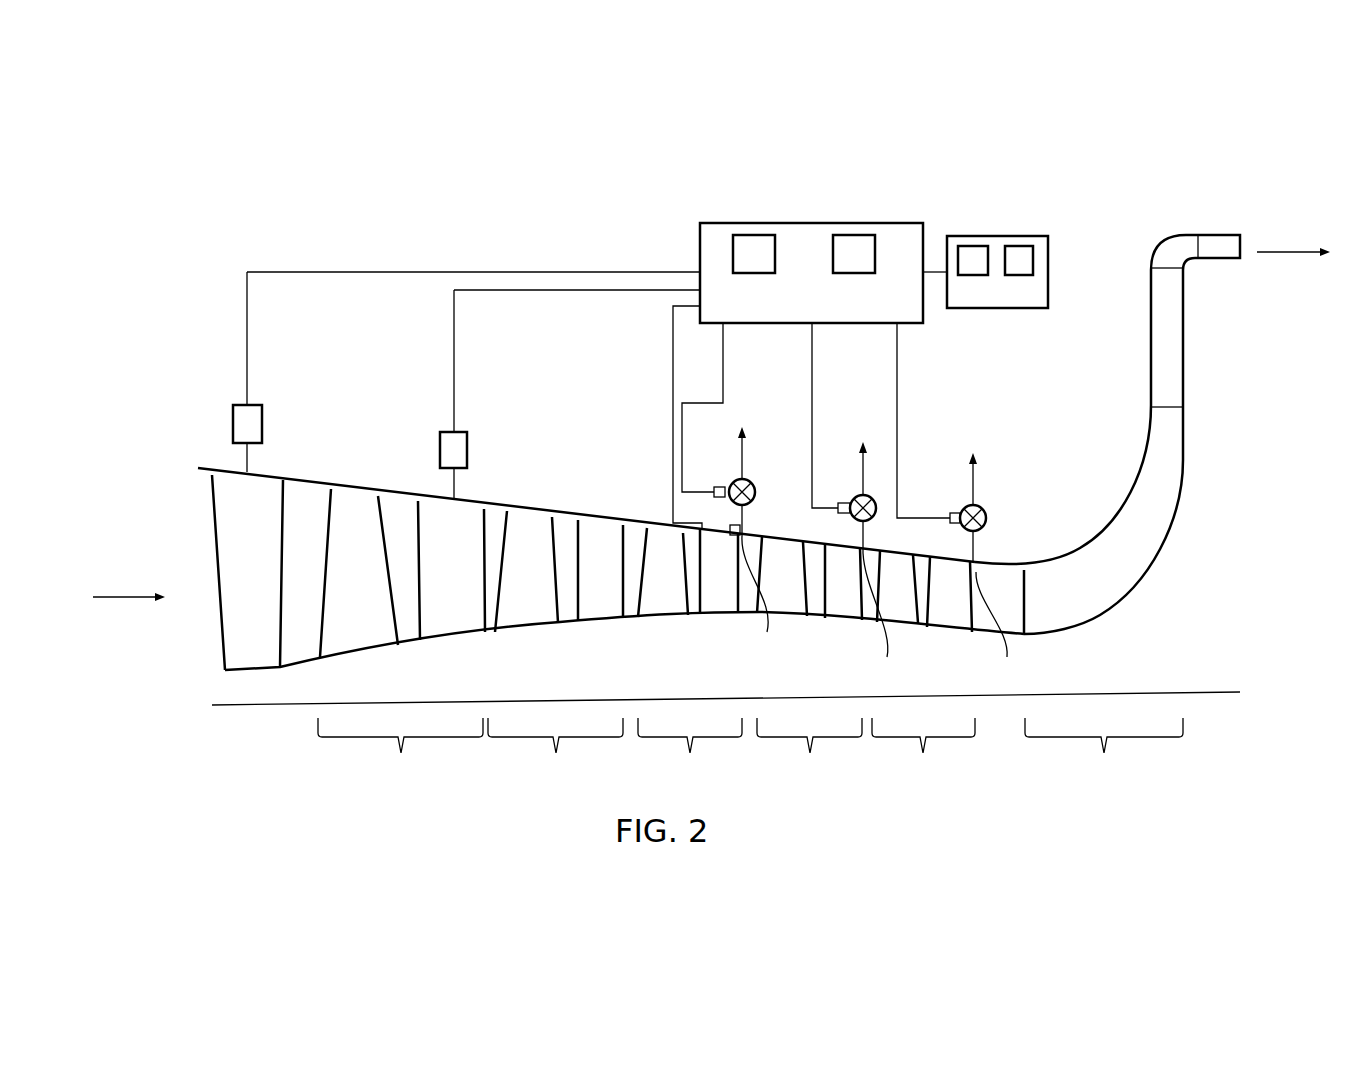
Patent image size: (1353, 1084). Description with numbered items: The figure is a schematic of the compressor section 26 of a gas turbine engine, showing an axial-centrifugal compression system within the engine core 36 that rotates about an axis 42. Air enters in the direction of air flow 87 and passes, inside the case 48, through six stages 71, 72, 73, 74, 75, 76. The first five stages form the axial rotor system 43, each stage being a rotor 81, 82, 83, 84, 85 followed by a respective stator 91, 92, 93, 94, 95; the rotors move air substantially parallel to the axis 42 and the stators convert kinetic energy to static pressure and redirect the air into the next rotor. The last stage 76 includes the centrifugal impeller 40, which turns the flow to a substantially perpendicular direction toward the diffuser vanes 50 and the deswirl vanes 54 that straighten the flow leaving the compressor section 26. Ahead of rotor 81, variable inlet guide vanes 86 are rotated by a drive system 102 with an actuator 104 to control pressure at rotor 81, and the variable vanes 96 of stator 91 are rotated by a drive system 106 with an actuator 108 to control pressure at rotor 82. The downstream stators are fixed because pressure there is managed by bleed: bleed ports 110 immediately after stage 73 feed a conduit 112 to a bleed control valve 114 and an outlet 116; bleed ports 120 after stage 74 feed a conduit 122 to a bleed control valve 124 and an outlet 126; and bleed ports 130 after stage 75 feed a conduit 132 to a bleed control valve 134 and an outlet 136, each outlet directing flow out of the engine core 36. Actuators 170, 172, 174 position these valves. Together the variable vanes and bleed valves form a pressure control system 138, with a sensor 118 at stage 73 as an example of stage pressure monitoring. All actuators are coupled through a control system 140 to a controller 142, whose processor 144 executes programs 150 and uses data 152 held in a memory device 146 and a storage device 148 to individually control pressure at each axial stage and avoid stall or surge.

The compressor section 26 is at (552, 399).
The engine core 36 is at (634, 533).
The centrifugal impeller 40 is at (1074, 614).
The axis 42 is at (1180, 690).
The axial rotor system 43 is at (355, 479).
The case 48 is at (308, 482).
The diffuser vanes 50 is at (1173, 353).
The deswirl vanes 54 is at (1223, 247).
The first stage 71 is at (400, 753).
The second stage 72 is at (555, 753).
The third stage 73 is at (690, 756).
The fourth stage 74 is at (809, 756).
The fifth stage 75 is at (923, 756).
The sixth stage 76 is at (1104, 758).
The first rotor 81 is at (371, 634).
The second rotor 82 is at (543, 617).
The third rotor 83 is at (676, 614).
The fourth rotor 84 is at (798, 609).
The fifth rotor 85 is at (908, 614).
The inlet guide vanes 86 is at (266, 624).
The air flow 87 is at (132, 602).
The first stator 91 is at (468, 614).
The second stator 92 is at (615, 599).
The third stator 93 is at (735, 602).
The fourth stator 94 is at (855, 611).
The fifth stator 95 is at (965, 622).
The vanes 96 is at (485, 506).
The drive system 102 is at (197, 372).
The actuator 104 is at (233, 427).
The drive system 106 is at (392, 394).
The actuator 108 is at (440, 452).
The bleed ports 110 is at (764, 597).
The conduit 112 is at (753, 493).
The bleed control valve 114 is at (752, 480).
The outlet 116 is at (746, 455).
The sensor 118 is at (742, 527).
The bleed ports 120 is at (882, 618).
The conduit 122 is at (858, 518).
The bleed control valve 124 is at (873, 514).
The outlet 126 is at (866, 458).
The bleed ports 130 is at (1002, 627).
The conduit 132 is at (977, 553).
The bleed control valve 134 is at (986, 517).
The outlet 136 is at (979, 474).
The pressure control system 138 is at (1036, 388).
The control system 140 is at (598, 350).
The controller 142 is at (836, 310).
The processor 144 is at (775, 250).
The memory device 146 is at (873, 250).
The storage device 148 is at (1002, 267).
The programs 150 is at (977, 275).
The data 152 is at (1018, 242).
The actuator 170 is at (722, 486).
The actuator 172 is at (842, 504).
The actuator 174 is at (953, 513).